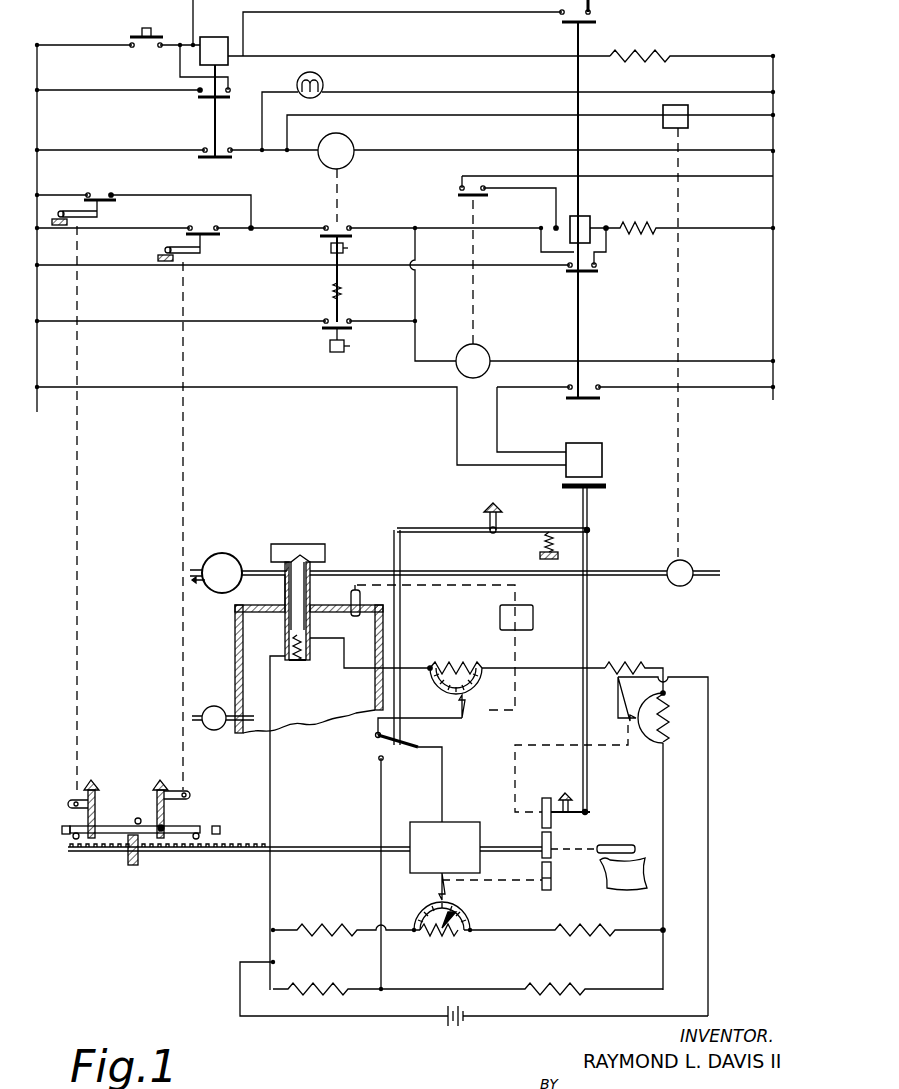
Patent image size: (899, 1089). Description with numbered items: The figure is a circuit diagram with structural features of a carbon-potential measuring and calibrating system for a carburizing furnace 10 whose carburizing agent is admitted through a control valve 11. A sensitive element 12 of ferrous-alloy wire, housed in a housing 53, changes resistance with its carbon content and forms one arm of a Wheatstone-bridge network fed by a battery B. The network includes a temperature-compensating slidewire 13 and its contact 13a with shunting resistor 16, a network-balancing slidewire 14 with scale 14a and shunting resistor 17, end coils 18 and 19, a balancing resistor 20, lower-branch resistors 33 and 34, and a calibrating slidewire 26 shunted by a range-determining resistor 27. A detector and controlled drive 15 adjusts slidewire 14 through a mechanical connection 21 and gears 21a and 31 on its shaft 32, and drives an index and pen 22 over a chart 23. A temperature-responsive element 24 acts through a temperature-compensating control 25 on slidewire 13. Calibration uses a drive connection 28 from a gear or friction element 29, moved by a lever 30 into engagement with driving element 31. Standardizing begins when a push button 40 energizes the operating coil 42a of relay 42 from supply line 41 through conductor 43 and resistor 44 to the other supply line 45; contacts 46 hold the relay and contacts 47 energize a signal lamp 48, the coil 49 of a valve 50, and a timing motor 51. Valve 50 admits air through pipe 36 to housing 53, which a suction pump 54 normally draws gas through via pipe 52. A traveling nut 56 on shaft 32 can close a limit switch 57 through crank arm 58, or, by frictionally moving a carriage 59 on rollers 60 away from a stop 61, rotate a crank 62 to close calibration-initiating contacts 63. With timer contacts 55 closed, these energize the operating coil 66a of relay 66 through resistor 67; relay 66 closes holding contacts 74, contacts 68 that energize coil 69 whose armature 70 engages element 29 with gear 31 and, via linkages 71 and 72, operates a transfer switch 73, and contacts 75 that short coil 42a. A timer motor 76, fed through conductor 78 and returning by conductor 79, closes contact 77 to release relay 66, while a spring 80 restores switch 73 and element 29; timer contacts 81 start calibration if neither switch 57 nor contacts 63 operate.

The carburizing furnace 10 is at (358, 712).
The control valve 11 is at (208, 706).
The sensitive element 12 is at (322, 662).
The temperature-compensating slidewire 13 is at (440, 694).
The temperature-compensating slidewire contact 13a is at (480, 681).
The network-balancing slidewire 14 is at (414, 912).
The scale 14a is at (456, 914).
The detector and controlled drive 15 is at (430, 822).
The shunting resistor 16 is at (458, 663).
The shunting resistor 17 is at (446, 940).
The end coil 18 is at (318, 938).
The end coil 19 is at (580, 938).
The resistor 20 is at (611, 655).
The mechanical connection 21 is at (470, 882).
The gear 21a is at (552, 884).
The index and pen 22 is at (612, 842).
The record sheet or chart 23 is at (622, 885).
The temperature-responsive element 24 is at (356, 588).
The temperature-compensating control device 25 is at (535, 618).
The calibrating slidewire 26 is at (652, 748).
The range-determining resistor 27 is at (669, 712).
The drive connection 28 is at (512, 776).
The gear or friction element 29 is at (543, 810).
The lever 30 is at (578, 814).
The driving element 31 is at (540, 846).
The shaft 32 is at (345, 848).
The resistor 33 is at (325, 986).
The resistor 34 is at (576, 986).
The pipe or conduit 36 is at (380, 555).
The push button 40 is at (128, 36).
The supply line 41 is at (40, 66).
The relay 42 is at (253, 133).
The operating coil 42a is at (216, 37).
The conductor 43 is at (428, 56).
The resistor 44 is at (636, 56).
The supply line 45 is at (770, 165).
The contacts 46 is at (198, 93).
The contacts 47 is at (203, 153).
The signal lamp 48 is at (323, 80).
The operating coil 49 is at (663, 125).
The valve 50 is at (690, 560).
The timing motor 51 is at (392, 143).
The conduit or pipe 52 is at (258, 568).
The housing 53 is at (308, 548).
The suction pump 54 is at (213, 550).
The contacts 55 is at (326, 230).
The traveling nut 56 is at (140, 860).
The limit switch 57 is at (100, 192).
The crank arm 58 is at (72, 800).
The carriage 59 is at (112, 826).
The rollers 60 is at (74, 838).
The stop 61 is at (62, 828).
The crank 62 is at (156, 808).
The calibration-initiating contacts 63 is at (205, 225).
The relay 66 is at (576, 128).
The operating coil 66a is at (588, 218).
The resistor 67 is at (630, 230).
The contacts 68 is at (600, 396).
The coil 69 is at (603, 460).
The armature 70 is at (604, 492).
The linkage 71 is at (456, 528).
The linkage 72 is at (402, 553).
The transfer switch 73 is at (374, 750).
The contacts 74 is at (598, 270).
The contacts 75 is at (560, 15).
The timer motor 76 is at (527, 345).
The contact 77 is at (488, 198).
The conductor 78 is at (416, 305).
The conductor 79 is at (616, 360).
The spring 80 is at (540, 548).
The contacts 81 is at (320, 326).
The battery B is at (455, 1030).